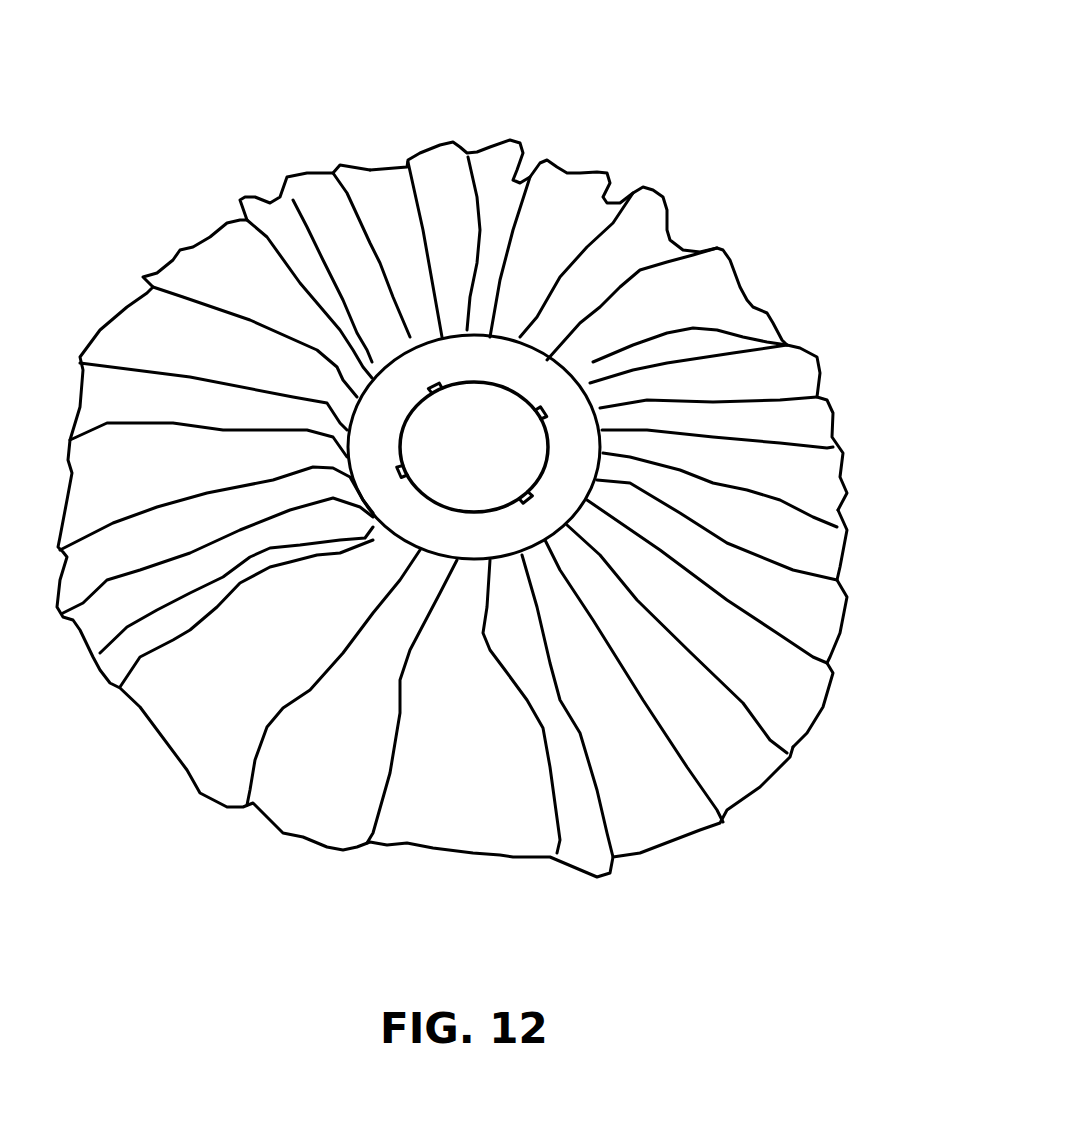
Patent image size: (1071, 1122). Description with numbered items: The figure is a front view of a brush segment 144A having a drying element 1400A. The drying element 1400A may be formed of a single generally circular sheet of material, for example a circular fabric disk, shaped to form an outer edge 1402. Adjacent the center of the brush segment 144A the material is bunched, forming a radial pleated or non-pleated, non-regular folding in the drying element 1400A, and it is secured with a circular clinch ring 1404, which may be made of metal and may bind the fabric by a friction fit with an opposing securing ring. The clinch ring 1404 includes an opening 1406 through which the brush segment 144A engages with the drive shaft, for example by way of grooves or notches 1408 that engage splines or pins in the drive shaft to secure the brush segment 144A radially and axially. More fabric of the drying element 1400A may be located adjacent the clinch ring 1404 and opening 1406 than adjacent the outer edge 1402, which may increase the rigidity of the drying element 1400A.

The brush segment 144A is at (500, 469).
The drying element 1400A is at (807, 423).
The outer edge 1402 is at (845, 494).
The clinch ring 1404 is at (583, 387).
The opening 1406 is at (455, 435).
The grooves or notches 1408 is at (547, 408).